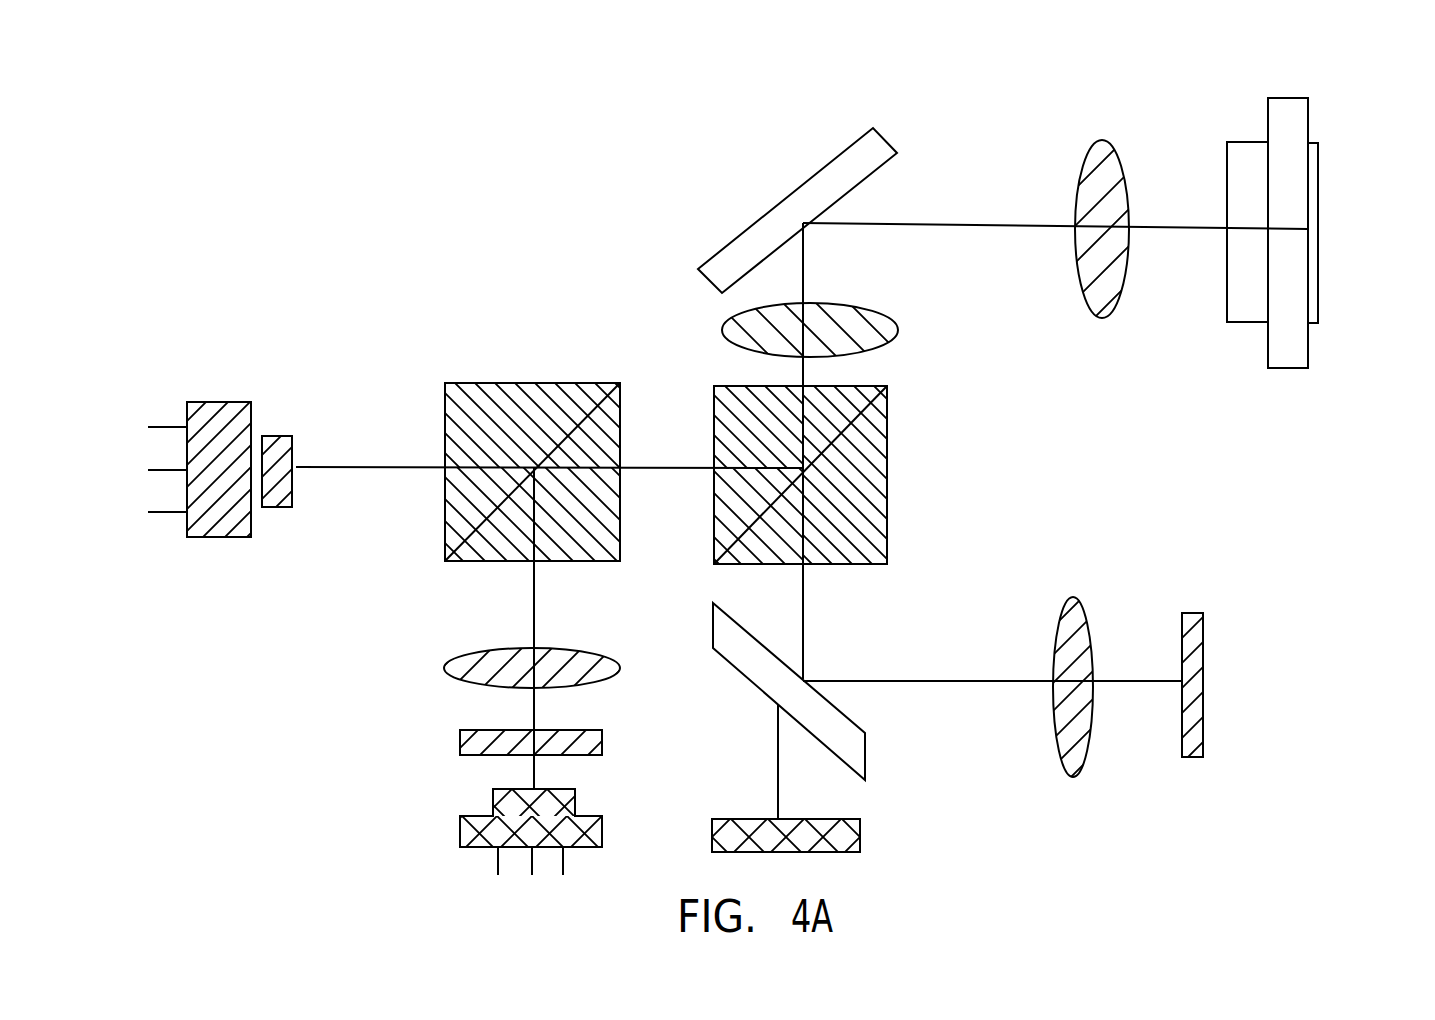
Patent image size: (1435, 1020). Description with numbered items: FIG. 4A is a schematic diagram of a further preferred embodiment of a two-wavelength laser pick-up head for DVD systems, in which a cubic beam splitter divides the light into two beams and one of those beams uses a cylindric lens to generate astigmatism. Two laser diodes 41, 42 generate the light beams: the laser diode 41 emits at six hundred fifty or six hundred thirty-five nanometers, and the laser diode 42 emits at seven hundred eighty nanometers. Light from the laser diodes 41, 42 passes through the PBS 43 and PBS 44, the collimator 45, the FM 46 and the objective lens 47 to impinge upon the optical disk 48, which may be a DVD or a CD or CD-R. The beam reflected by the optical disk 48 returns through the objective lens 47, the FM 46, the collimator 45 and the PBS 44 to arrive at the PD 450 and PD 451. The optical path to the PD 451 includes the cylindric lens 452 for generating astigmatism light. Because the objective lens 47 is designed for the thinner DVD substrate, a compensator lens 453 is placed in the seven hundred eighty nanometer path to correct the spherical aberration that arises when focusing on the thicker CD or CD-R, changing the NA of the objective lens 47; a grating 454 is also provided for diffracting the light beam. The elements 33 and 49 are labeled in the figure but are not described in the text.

The beam splitter 33 is at (532, 477).
The laser diode 41 is at (212, 553).
The laser diode 42 is at (440, 837).
The PBS 43 is at (427, 507).
The PBS 44 is at (895, 432).
The collimator 45 is at (712, 325).
The FM 46 is at (788, 175).
The objective lens 47 is at (1078, 160).
The optical disk 48 is at (1318, 93).
The half mirror 49 is at (737, 682).
The PD 450 is at (868, 836).
The PD 451 is at (1208, 600).
The cylindric lens 452 is at (1090, 597).
The compensator lens 453 is at (440, 655).
The grating 454 is at (447, 748).